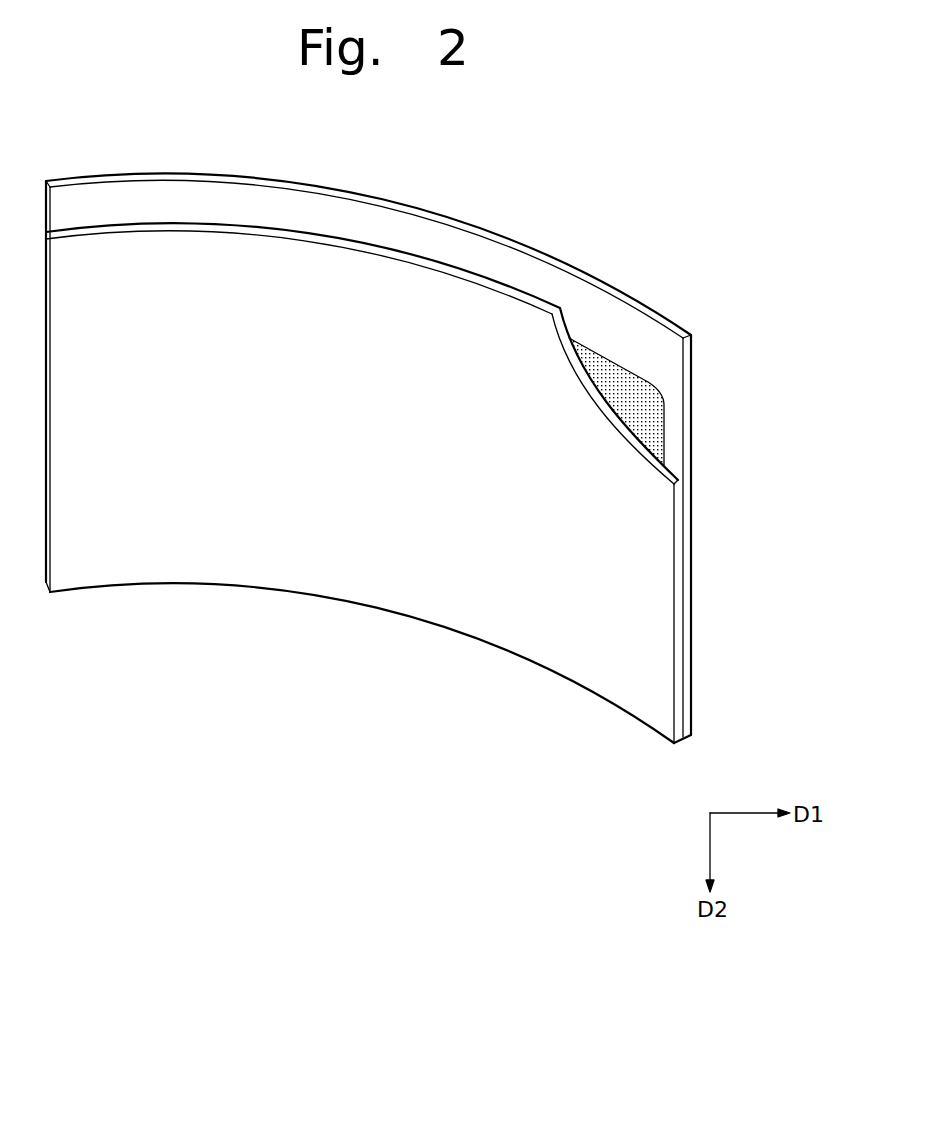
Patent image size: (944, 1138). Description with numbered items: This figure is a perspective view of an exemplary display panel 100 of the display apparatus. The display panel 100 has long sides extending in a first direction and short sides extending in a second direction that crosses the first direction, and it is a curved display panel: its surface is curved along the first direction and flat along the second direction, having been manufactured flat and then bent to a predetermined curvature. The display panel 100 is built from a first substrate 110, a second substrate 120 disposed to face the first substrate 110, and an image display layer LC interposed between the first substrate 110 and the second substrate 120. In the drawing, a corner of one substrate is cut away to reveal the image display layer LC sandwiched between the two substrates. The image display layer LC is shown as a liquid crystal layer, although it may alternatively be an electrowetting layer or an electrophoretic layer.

The display panel 100 is at (454, 458).
The first substrate 110 is at (688, 385).
The second substrate 120 is at (675, 518).
The image display layer LC is at (650, 447).